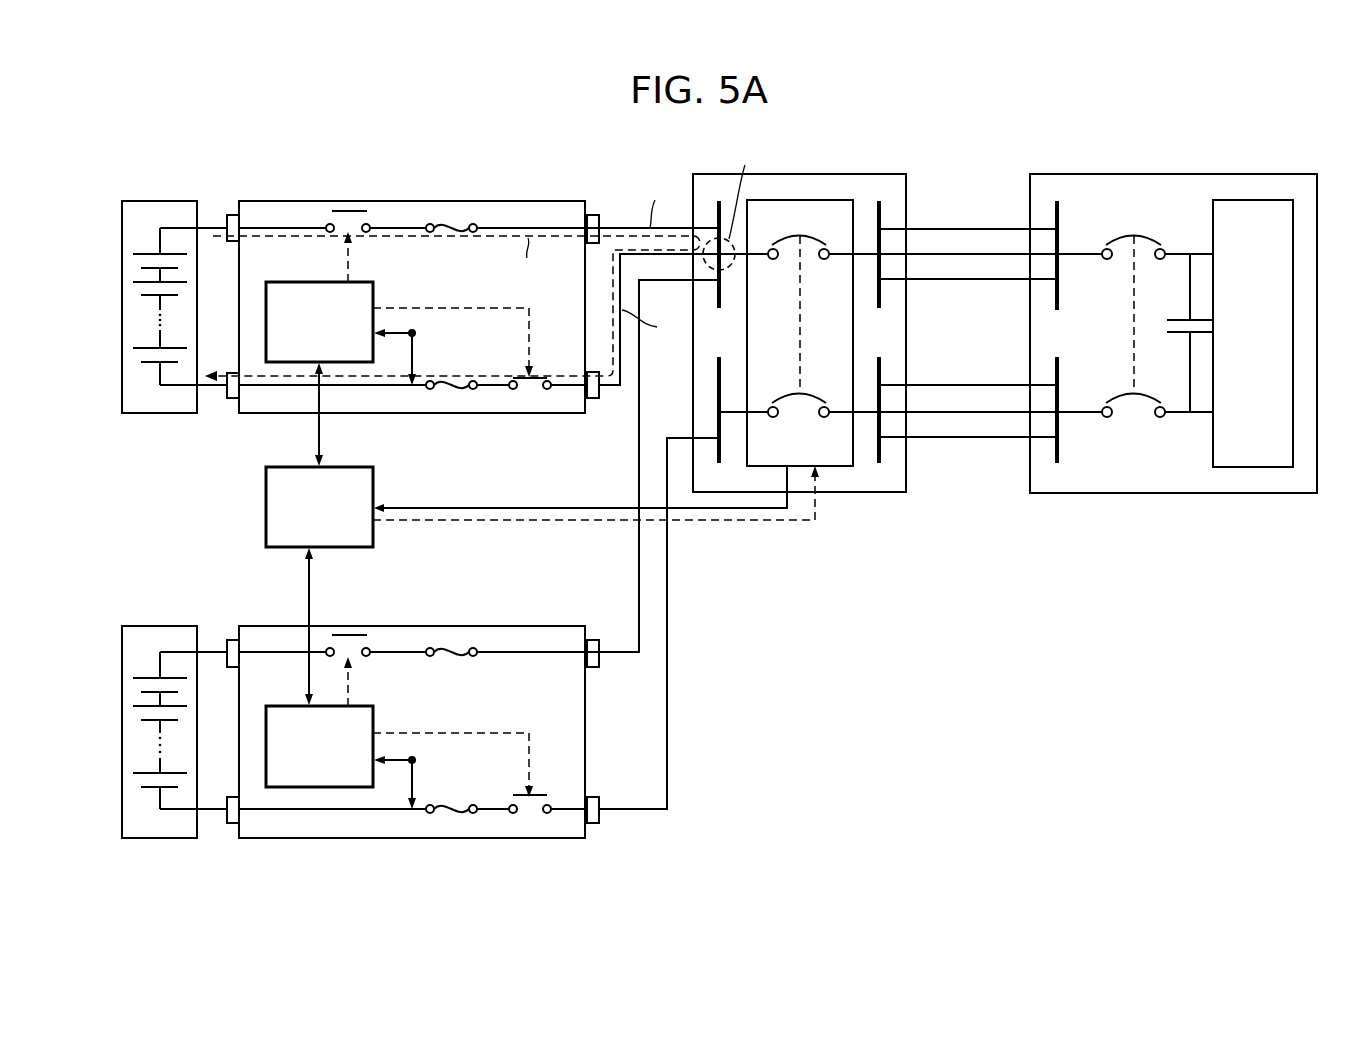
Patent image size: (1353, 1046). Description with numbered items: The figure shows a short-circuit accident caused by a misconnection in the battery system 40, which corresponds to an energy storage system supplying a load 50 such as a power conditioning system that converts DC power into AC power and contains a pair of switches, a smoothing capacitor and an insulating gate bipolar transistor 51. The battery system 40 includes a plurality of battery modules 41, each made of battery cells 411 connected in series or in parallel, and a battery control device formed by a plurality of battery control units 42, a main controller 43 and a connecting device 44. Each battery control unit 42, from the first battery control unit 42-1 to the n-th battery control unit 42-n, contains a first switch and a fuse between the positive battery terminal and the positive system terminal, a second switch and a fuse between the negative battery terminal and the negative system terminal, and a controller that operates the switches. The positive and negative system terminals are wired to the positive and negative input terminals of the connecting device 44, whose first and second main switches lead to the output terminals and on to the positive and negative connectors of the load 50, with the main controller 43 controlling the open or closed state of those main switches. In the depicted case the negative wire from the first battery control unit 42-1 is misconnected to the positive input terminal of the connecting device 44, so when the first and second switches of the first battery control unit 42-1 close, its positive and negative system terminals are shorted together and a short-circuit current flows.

The battery system 40 is at (700, 146).
The battery module 41 is at (157, 201).
The battery cell 411 is at (143, 253).
The battery control unit 42 is at (486, 501).
The first battery control unit 42-1 is at (512, 201).
The n-th battery control unit 42-n is at (512, 626).
The main controller 43 is at (350, 467).
The connecting device 44 is at (843, 174).
The load 50 is at (1170, 174).
The IGBT 51 is at (1253, 200).